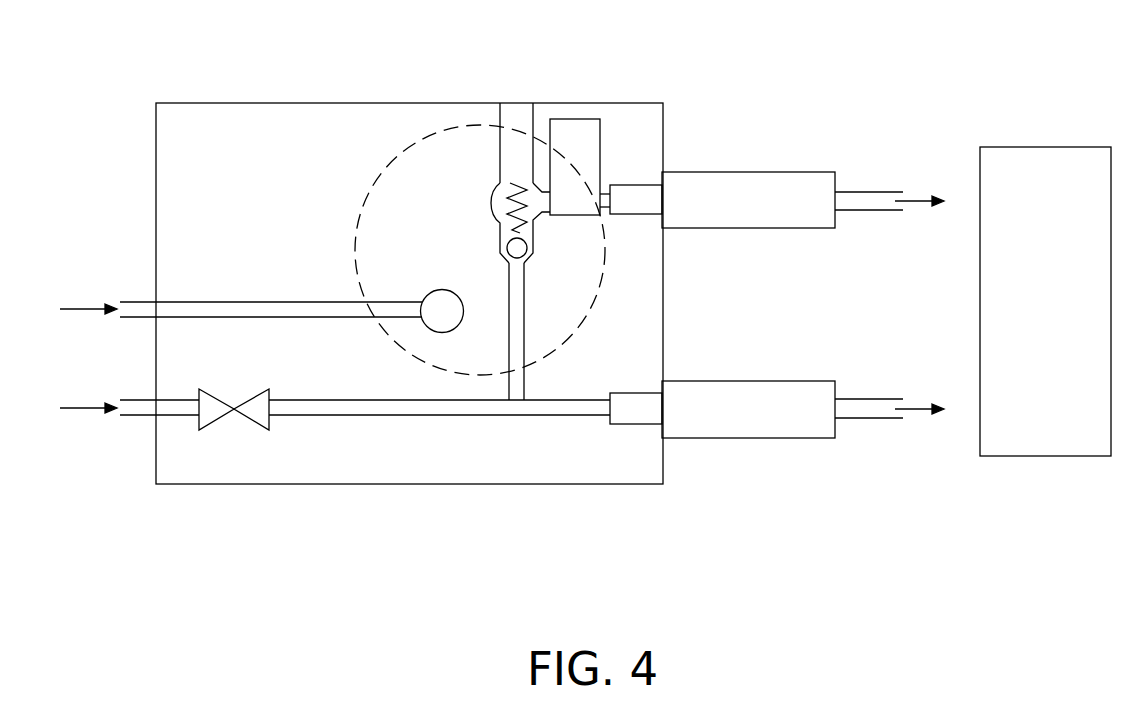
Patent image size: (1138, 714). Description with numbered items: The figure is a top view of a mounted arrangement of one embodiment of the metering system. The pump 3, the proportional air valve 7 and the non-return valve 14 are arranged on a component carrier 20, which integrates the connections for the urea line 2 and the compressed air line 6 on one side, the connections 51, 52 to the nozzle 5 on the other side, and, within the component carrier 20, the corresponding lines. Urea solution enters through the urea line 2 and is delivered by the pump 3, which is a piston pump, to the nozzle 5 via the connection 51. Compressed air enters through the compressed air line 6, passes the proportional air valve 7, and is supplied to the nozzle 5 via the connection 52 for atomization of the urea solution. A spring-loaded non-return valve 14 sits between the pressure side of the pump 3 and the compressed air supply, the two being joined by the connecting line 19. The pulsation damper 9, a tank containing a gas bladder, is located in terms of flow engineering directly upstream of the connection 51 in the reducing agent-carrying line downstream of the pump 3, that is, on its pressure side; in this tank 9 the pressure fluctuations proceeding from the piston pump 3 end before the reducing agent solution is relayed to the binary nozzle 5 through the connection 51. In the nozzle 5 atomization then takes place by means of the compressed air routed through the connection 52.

The component carrier 20 is at (242, 103).
The pump 3 is at (448, 118).
The pulsation damper 9 is at (575, 142).
The non-return valve 14 is at (522, 230).
The connecting line 19 is at (521, 339).
The urea line 2 is at (137, 302).
The compressed air line 6 is at (126, 416).
The proportional air valve 7 is at (215, 412).
The connection 51 is at (808, 172).
The connection 52 is at (777, 381).
The nozzle 5 is at (1035, 147).